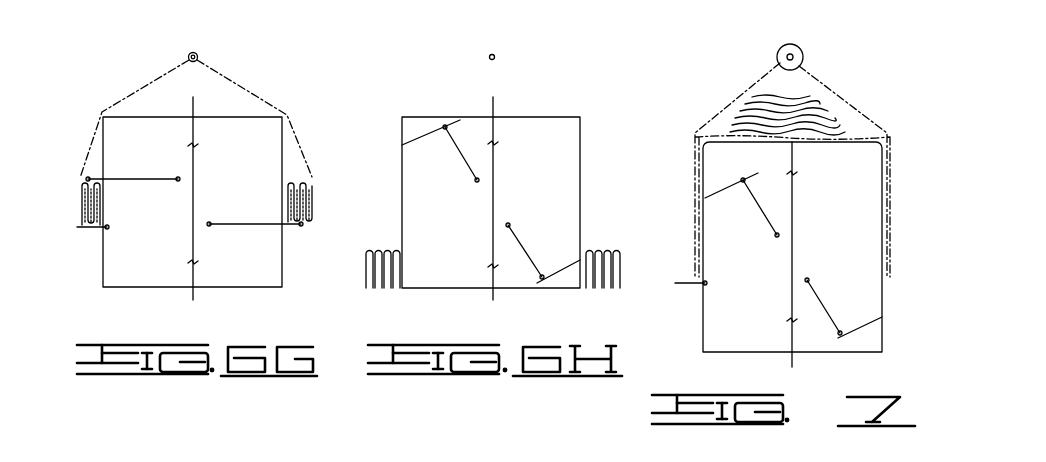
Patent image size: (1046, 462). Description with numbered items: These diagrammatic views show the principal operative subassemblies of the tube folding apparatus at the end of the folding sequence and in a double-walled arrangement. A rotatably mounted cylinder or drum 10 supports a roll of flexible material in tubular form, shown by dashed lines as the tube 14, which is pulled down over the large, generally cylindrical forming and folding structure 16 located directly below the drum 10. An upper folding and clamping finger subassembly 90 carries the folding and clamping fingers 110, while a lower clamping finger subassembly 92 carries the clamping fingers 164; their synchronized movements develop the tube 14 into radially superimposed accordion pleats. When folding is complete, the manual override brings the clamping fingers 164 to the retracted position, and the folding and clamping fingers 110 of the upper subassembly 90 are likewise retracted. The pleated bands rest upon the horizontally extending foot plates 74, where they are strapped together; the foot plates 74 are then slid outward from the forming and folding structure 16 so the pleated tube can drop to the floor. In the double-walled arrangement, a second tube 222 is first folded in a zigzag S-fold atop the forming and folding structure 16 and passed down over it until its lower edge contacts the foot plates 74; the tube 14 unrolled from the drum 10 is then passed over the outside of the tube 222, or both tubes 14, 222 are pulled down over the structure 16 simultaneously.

In FIG. 6G, the cylinder or drum 10 is at (197, 55).
In FIG. 6H, the cylinder or drum 10 is at (496, 54).
In FIG. 7, the cylinder or drum 10 is at (802, 52).
In FIG. 6G, the tube 14 is at (230, 84).
In FIG. 7, the tube 14 is at (752, 76).
In FIG. 6G, the forming and folding structure 16 is at (284, 267).
In FIG. 6H, the forming and folding structure 16 is at (582, 232).
In FIG. 7, the forming and folding structure 16 is at (883, 303).
In FIG. 6G, the foot plate 74 is at (92, 233).
In FIG. 7, the foot plate 74 is at (692, 290).
In FIG. 6G, the upper folding and clamping finger subassembly 90 is at (152, 176).
In FIG. 6H, the upper folding and clamping finger subassembly 90 is at (453, 150).
In FIG. 7, the upper folding and clamping finger subassembly 90 is at (750, 202).
In FIG. 6G, the lower clamping finger subassembly 92 is at (252, 221).
In FIG. 6H, the lower clamping finger subassembly 92 is at (532, 248).
In FIG. 7, the lower clamping finger subassembly 92 is at (830, 302).
In FIG. 6G, the folding and clamping finger 110 is at (80, 193).
In FIG. 6H, the folding and clamping finger 110 is at (427, 126).
In FIG. 7, the folding and clamping finger 110 is at (723, 186).
In FIG. 6G, the clamping finger 164 is at (310, 200).
In FIG. 6H, the clamping finger 164 is at (557, 273).
In FIG. 7, the clamping finger 164 is at (855, 332).
In FIG. 7, the second tube 222 is at (837, 120).